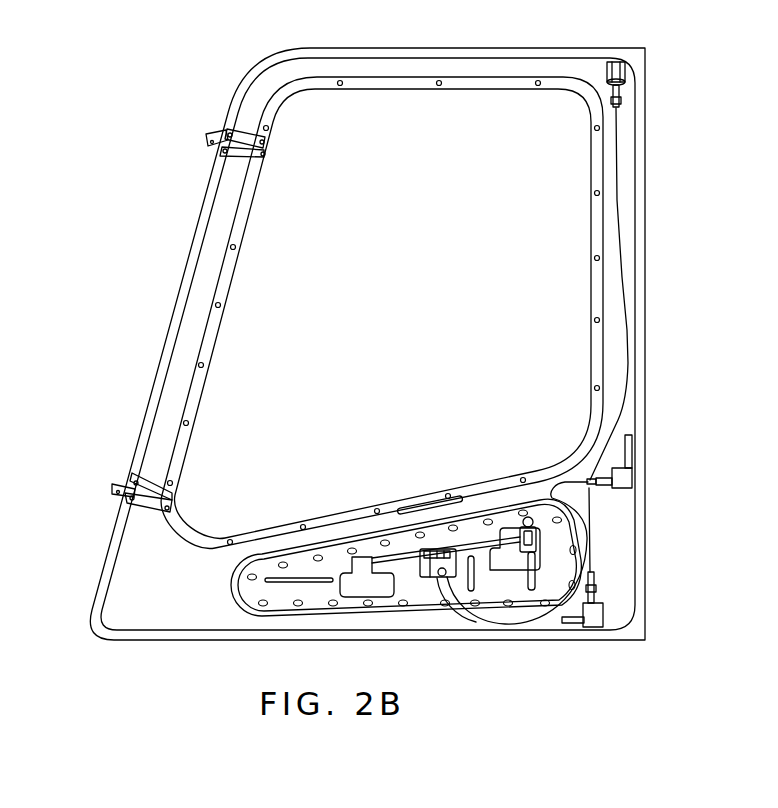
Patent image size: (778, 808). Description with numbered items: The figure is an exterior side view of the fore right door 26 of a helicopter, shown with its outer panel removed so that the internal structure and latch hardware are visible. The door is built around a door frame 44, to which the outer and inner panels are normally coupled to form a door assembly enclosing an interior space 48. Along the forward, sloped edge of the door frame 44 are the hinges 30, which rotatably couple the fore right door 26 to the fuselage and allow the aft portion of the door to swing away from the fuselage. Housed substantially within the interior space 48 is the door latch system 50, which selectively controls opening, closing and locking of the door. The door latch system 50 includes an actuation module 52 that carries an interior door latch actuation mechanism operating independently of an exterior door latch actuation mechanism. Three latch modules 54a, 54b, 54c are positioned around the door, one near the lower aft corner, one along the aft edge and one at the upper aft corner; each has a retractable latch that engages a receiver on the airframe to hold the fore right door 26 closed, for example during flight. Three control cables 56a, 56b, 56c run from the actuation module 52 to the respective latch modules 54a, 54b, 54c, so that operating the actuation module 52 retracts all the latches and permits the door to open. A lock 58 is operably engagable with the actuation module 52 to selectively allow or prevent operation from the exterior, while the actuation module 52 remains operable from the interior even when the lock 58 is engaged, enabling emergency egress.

The fore right door 26 is at (628, 135).
The hinges 30 is at (208, 136).
The door frame 44 is at (190, 313).
The interior space 48 is at (620, 525).
The door latch system 50 is at (508, 518).
The actuation module 52 is at (401, 545).
The latch module 54a is at (593, 627).
The latch module 54b is at (625, 494).
The latch module 54c is at (606, 70).
The control cable 56a is at (603, 556).
The control cable 56b is at (548, 492).
The control cable 56c is at (623, 234).
The lock 58 is at (438, 578).